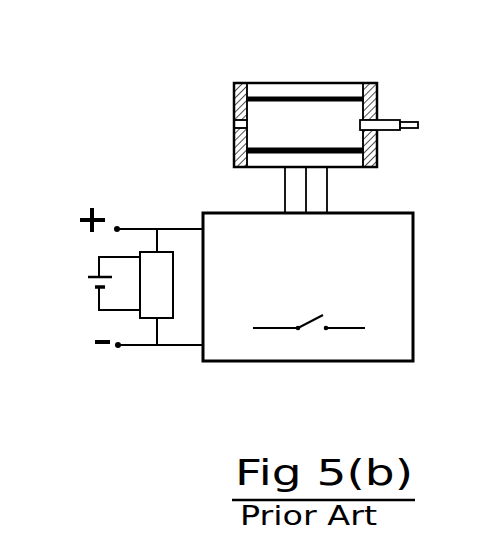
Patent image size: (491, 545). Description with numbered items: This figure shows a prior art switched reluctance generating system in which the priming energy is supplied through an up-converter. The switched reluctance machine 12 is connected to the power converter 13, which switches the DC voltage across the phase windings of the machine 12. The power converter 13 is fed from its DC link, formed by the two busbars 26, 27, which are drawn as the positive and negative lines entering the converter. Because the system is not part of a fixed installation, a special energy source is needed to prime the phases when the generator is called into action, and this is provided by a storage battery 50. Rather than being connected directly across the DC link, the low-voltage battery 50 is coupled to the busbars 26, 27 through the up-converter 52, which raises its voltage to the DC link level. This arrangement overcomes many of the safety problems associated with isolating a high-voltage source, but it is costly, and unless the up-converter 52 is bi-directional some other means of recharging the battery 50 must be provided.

The switched reluctance machine 12 is at (307, 83).
The power converter 13 is at (387, 213).
The busbar 26 is at (172, 230).
The busbar 27 is at (178, 347).
The storage battery 50 is at (86, 277).
The up-converter 52 is at (152, 252).